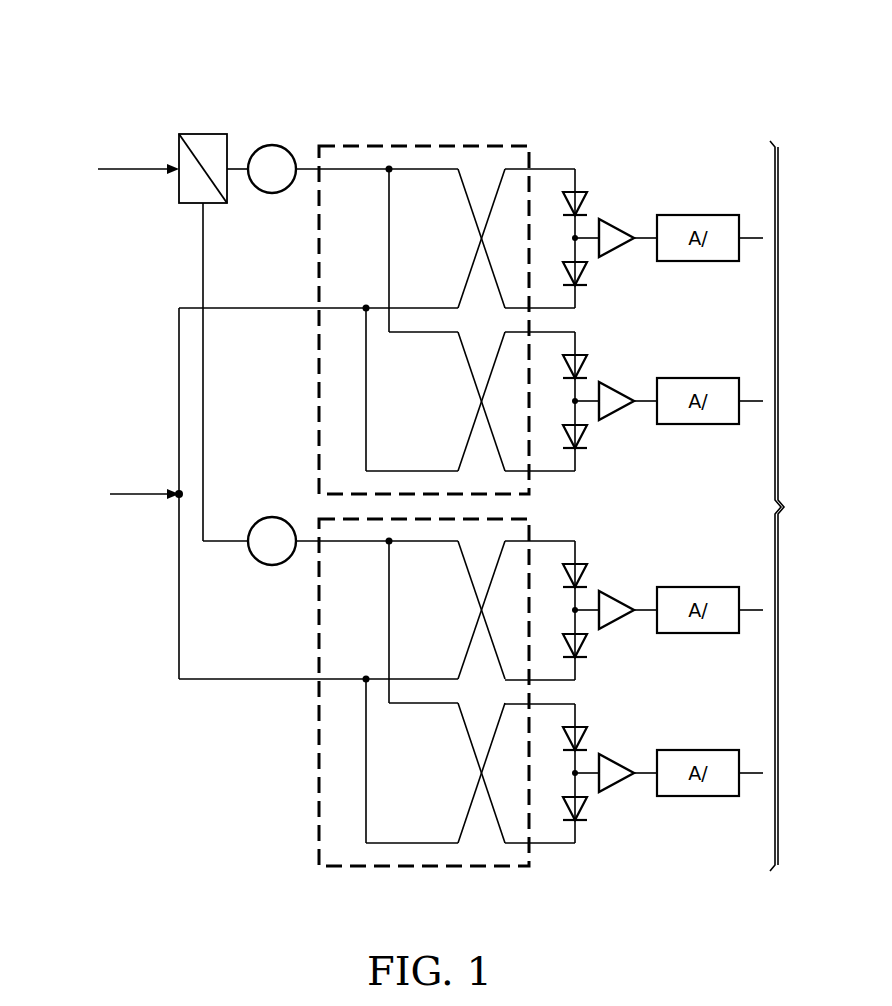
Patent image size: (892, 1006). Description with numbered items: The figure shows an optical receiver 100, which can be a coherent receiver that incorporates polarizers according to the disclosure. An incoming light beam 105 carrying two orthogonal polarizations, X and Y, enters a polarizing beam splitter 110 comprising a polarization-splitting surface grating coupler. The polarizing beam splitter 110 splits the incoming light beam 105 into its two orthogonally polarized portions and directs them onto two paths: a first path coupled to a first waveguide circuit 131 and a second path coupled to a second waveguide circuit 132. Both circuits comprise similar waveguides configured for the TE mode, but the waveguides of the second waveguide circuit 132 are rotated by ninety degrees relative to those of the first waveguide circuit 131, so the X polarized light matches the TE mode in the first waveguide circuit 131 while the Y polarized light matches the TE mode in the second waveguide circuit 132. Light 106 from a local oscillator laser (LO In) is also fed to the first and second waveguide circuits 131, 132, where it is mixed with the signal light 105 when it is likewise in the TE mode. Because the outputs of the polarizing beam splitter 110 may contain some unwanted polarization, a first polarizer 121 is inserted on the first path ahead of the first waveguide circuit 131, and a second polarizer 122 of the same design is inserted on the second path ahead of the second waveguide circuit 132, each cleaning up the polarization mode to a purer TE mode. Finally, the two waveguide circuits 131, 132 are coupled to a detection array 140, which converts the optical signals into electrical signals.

The optical receiver 100 is at (116, 70).
The incoming light beam 105 is at (130, 166).
The local oscillator light 106 is at (142, 497).
The polarizing beam splitter 110 is at (179, 192).
The first polarizer 121 is at (270, 144).
The second polarizer 122 is at (270, 566).
The first waveguide circuit 131 is at (380, 138).
The second waveguide circuit 132 is at (378, 875).
The detection array 140 is at (804, 506).